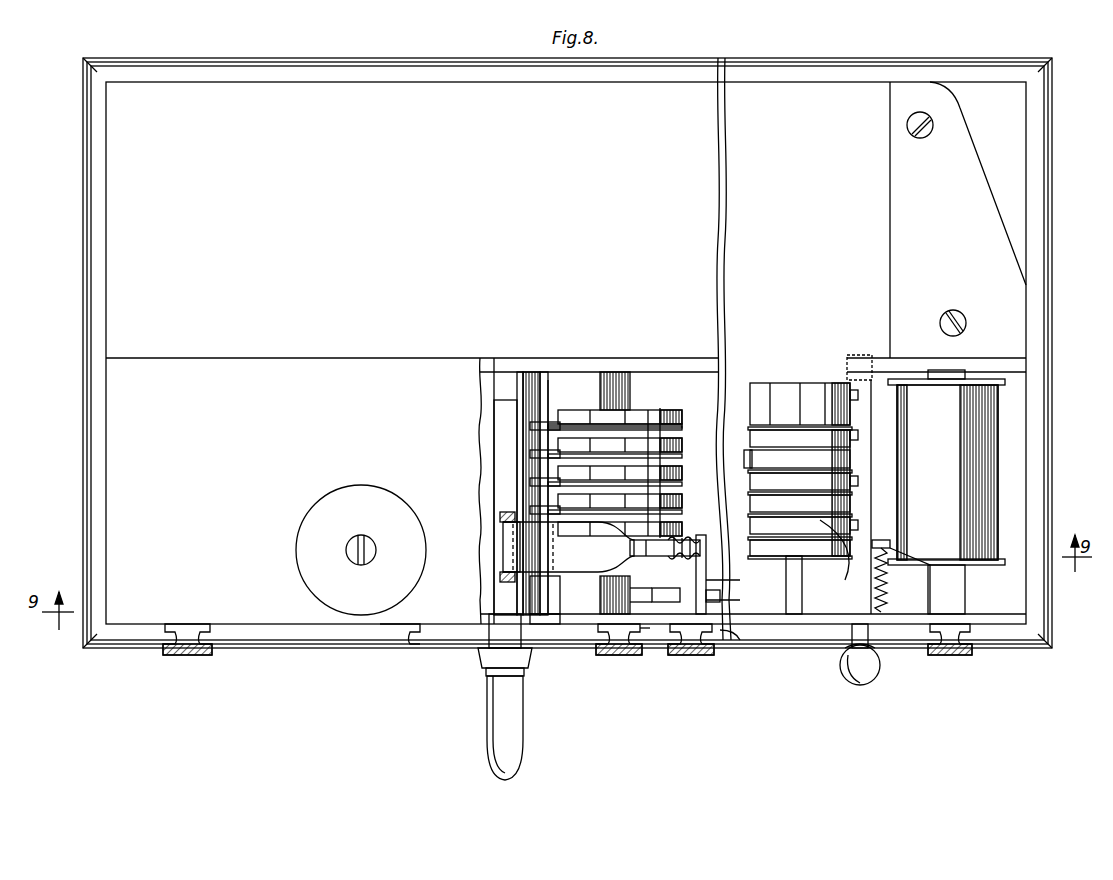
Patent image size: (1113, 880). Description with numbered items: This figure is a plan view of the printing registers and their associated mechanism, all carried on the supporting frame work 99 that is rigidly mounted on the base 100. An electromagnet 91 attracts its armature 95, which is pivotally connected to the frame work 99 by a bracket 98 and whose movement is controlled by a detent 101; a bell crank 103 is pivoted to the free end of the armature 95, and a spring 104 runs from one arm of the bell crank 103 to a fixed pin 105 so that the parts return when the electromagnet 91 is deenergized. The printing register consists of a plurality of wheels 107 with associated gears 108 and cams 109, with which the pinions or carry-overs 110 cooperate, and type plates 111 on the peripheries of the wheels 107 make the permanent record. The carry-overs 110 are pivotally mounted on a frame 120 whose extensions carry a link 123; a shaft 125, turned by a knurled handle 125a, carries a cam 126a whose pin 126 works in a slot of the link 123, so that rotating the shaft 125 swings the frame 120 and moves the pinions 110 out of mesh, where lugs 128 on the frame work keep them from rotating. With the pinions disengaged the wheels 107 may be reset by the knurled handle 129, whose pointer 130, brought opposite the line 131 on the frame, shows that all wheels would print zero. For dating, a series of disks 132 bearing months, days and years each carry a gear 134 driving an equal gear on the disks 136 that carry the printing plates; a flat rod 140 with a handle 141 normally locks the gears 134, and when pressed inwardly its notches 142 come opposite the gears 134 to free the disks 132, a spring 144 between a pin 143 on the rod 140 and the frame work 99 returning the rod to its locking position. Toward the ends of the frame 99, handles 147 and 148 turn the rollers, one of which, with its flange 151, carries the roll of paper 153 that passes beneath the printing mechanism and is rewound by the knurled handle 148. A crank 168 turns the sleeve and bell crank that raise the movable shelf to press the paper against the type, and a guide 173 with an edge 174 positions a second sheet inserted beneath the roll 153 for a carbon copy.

The electromagnet 91 is at (368, 478).
The armature 95 is at (568, 547).
The bracket 98 is at (505, 545).
The supporting frame work 99 is at (126, 614).
The base 100 is at (275, 640).
The detent 101 is at (597, 594).
The bell crank 103 is at (658, 556).
The spring 104 is at (696, 535).
The pin 105 is at (737, 585).
The wheels 107 is at (662, 414).
The gears 108 is at (684, 426).
The cams 109 is at (578, 412).
The carry-over pinions 110 is at (548, 432).
The type plates 111 is at (641, 413).
The frame 120 is at (515, 404).
The link 123 is at (563, 595).
The shaft 125 is at (750, 650).
The knurled handle 125a is at (710, 648).
The pin 126 is at (668, 585).
The cam 126a is at (720, 600).
The lugs 128 is at (496, 480).
The knurled handle 129 is at (620, 655).
The pointer 130 is at (600, 650).
The line 131 is at (598, 628).
The date disks 132 is at (793, 384).
The gear 134 is at (770, 384).
The printing disks 136 is at (750, 456).
The flat rod 140 is at (868, 398).
The handle 141 is at (870, 680).
The notches 142 is at (845, 578).
The pin 143 is at (892, 552).
The spring 144 is at (898, 600).
The handle 147 is at (950, 655).
The knurled handle 148 is at (188, 655).
The flange 151 is at (1005, 382).
The roll of paper 153 is at (997, 452).
The crank 168 is at (490, 660).
The guide 173 is at (966, 209).
The edge 174 is at (888, 266).